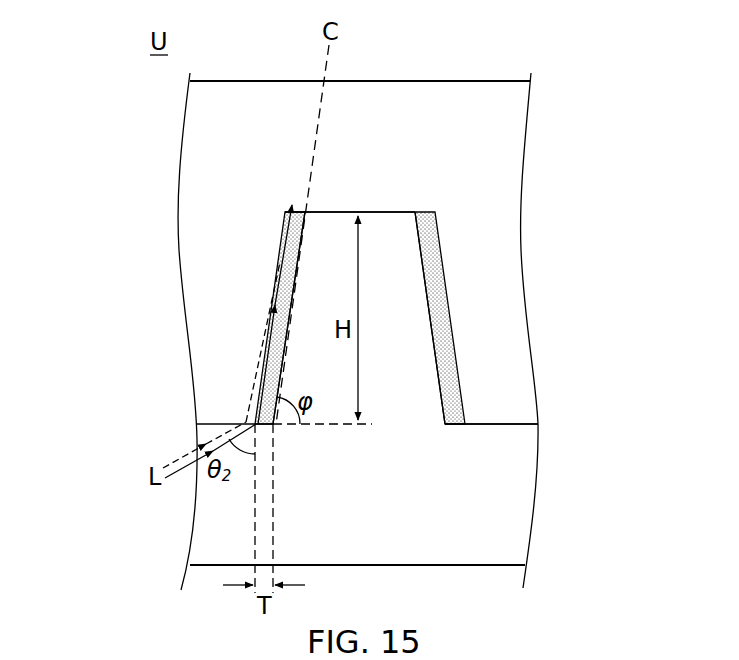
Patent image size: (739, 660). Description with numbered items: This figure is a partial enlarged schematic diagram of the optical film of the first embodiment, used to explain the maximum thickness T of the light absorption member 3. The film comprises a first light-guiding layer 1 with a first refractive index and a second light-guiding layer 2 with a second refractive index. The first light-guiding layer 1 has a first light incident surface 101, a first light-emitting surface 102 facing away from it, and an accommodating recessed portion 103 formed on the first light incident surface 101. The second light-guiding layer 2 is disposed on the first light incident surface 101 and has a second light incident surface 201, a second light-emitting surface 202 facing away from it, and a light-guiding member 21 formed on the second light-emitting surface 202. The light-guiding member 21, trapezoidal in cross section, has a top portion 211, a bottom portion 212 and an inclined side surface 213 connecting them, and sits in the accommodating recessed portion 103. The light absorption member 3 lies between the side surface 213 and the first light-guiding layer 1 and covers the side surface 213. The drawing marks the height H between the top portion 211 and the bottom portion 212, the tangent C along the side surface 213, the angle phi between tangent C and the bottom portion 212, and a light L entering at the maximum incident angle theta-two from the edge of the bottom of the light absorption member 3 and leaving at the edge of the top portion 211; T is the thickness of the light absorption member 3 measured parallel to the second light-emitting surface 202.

The first light-guiding layer 1 is at (401, 246).
The first light incident surface 101 is at (510, 424).
The first light-emitting surface 102 is at (508, 81).
The accommodating recessed portion 103 is at (400, 195).
The second light-guiding layer 2 is at (401, 393).
The second light incident surface 201 is at (428, 565).
The second light-emitting surface 202 is at (490, 424).
The light-guiding member 21 is at (438, 368).
The top portion 211 is at (405, 218).
The bottom portion 212 is at (405, 410).
The side surface 213 is at (432, 337).
The light absorption member 3 is at (432, 265).